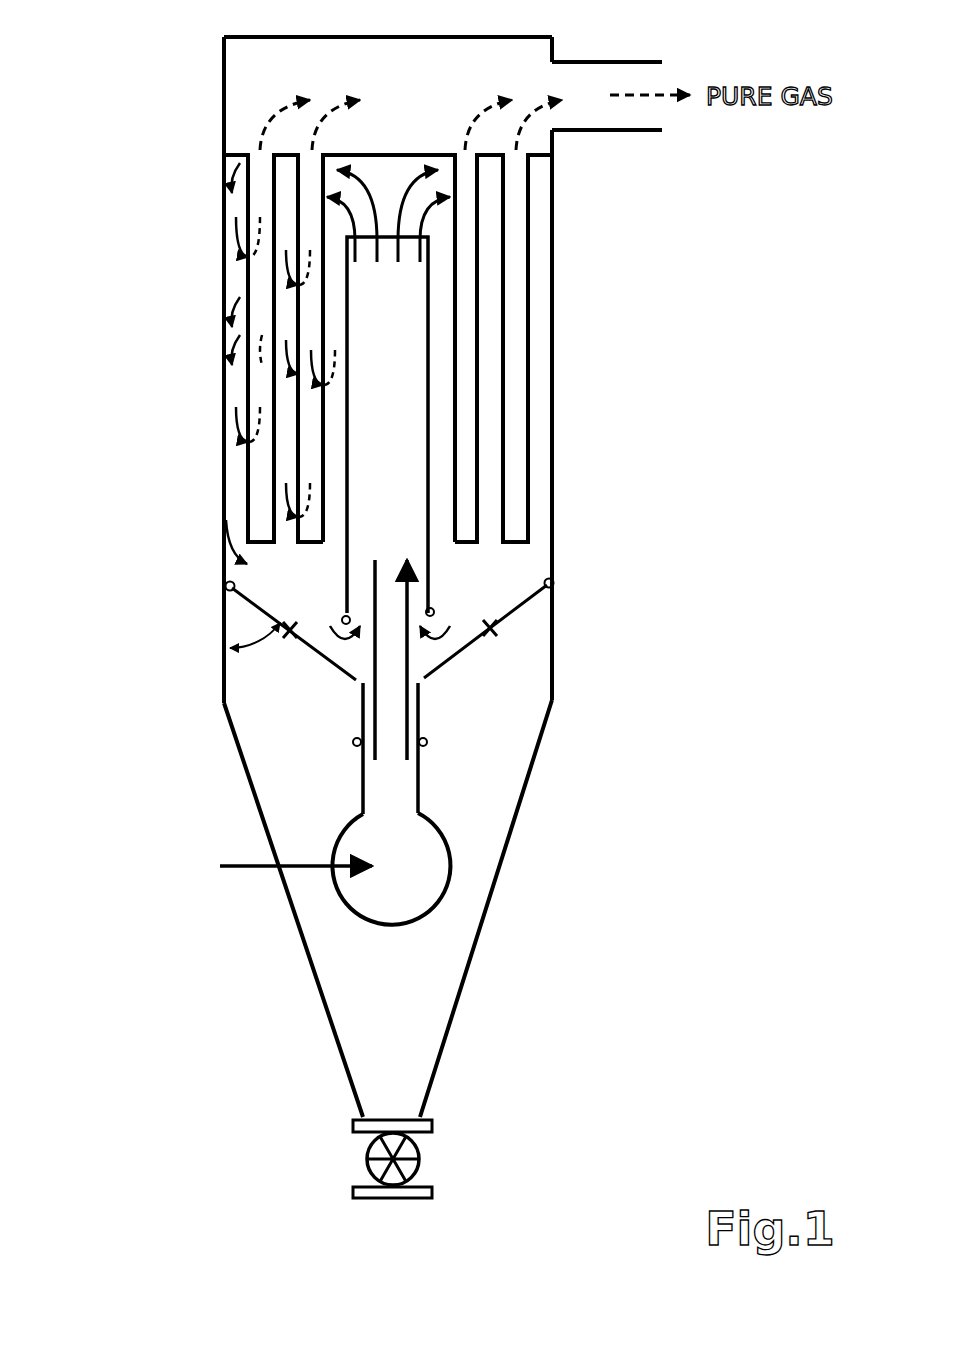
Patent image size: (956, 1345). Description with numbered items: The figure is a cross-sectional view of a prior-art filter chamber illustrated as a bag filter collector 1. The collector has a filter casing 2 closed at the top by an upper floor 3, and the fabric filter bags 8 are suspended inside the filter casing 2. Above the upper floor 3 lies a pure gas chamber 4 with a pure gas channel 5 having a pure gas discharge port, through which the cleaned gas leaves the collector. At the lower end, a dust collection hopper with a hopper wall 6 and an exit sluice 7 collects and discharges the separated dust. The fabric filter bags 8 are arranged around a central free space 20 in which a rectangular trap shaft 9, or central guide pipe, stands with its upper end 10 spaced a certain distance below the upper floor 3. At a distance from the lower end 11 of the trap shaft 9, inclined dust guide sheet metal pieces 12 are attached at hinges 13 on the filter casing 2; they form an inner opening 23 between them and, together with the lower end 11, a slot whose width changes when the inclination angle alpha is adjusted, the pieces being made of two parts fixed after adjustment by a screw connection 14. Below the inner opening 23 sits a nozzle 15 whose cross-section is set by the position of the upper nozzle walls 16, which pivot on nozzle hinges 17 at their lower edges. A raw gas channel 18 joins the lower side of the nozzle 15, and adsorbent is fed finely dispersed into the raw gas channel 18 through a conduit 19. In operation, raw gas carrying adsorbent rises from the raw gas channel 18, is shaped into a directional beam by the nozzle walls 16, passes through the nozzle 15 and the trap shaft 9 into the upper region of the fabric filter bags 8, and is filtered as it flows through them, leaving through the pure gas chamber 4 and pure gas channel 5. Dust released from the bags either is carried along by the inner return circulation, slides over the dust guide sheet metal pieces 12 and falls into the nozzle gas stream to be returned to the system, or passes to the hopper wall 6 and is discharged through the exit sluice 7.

The bag filter collector 1 is at (120, 477).
The filter casing 2 is at (222, 193).
The upper floor 3 is at (372, 154).
The pure gas chamber 4 is at (446, 55).
The pure gas channel 5 is at (622, 60).
The hopper wall 6 is at (324, 1000).
The exit sluice 7 is at (367, 1155).
The fabric filter bags 8 is at (468, 260).
The rectangular trap shaft 9 is at (430, 323).
The upper end 10 is at (388, 211).
The lower end 11 is at (343, 617).
The dust guide sheet metal pieces 12 is at (524, 600).
The hinges 13 is at (553, 582).
The screw connection 14 is at (492, 630).
The nozzle 15 is at (395, 793).
The upper nozzle walls 16 is at (422, 715).
The nozzle hinges 17 is at (353, 745).
The raw gas channel 18 is at (433, 870).
The conduit 19 is at (220, 864).
The central free space 20 is at (438, 382).
The inner opening 23 is at (383, 688).